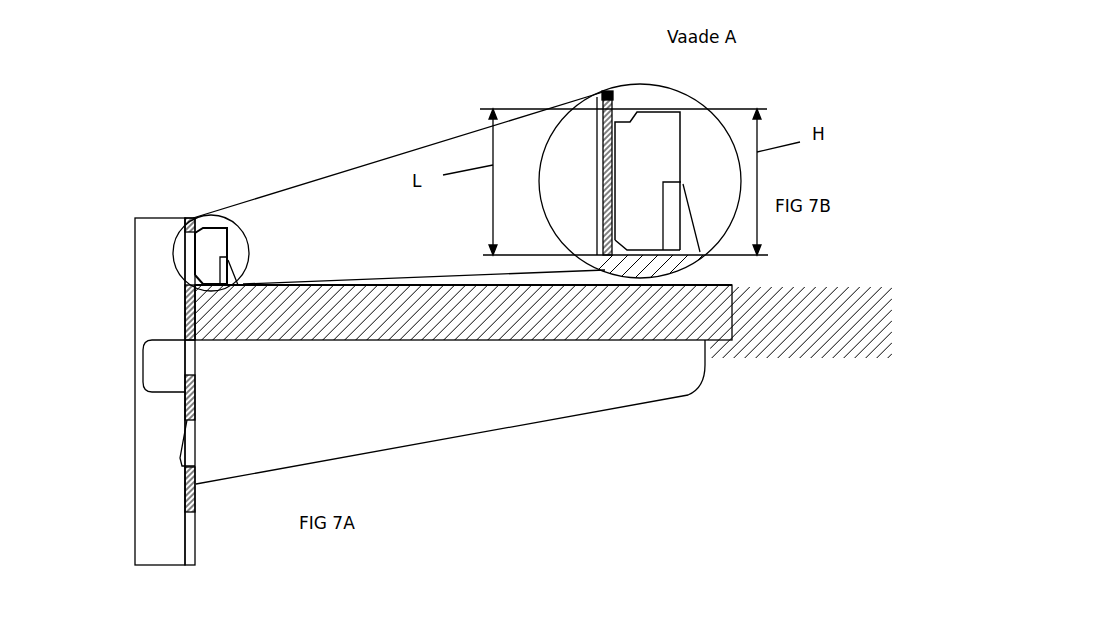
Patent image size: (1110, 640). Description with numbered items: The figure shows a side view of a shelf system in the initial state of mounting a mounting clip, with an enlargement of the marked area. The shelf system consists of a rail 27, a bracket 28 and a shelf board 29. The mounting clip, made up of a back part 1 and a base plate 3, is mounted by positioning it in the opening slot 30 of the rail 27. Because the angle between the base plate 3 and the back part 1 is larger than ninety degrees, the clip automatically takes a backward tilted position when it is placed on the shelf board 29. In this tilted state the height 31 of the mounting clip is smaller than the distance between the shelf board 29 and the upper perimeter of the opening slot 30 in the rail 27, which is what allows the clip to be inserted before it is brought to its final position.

In FIG. 7A, the back part 1 is at (230, 240).
In FIG. 7B, the back part 1 is at (670, 150).
In FIG. 7A, the base plate 3 is at (250, 285).
In FIG. 7B, the base plate 3 is at (703, 252).
In FIG. 7A, the rail 27 is at (157, 270).
In FIG. 7A, the bracket 28 is at (438, 423).
In FIG. 7A, the shelf board 29 is at (693, 312).
In FIG. 7A, the opening slot 30 is at (185, 232).
In FIG. 7B, the opening slot 30 is at (596, 128).
In FIG. 7B, the height of the mounting clip 31 is at (604, 95).